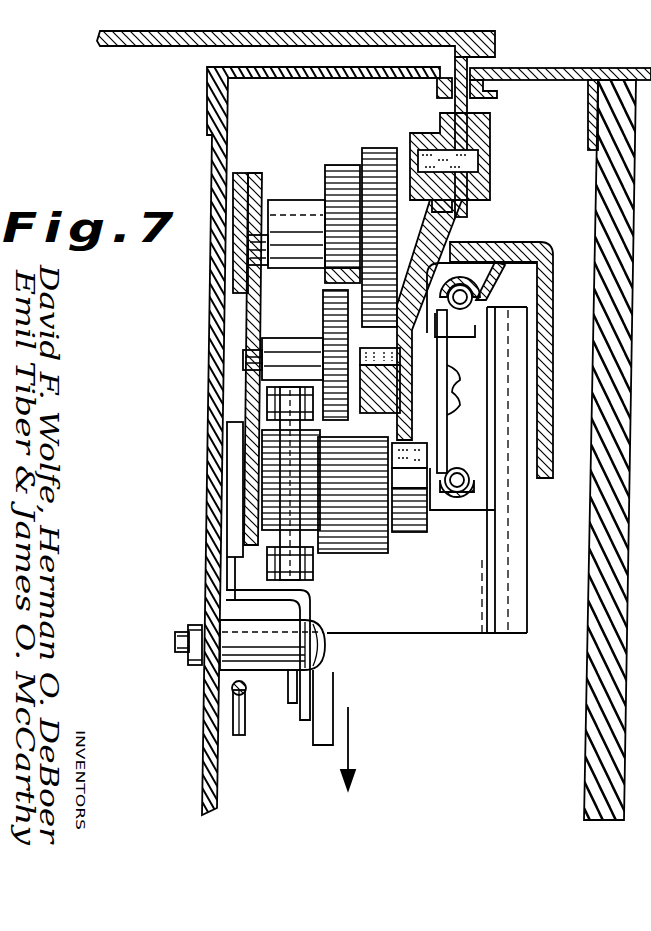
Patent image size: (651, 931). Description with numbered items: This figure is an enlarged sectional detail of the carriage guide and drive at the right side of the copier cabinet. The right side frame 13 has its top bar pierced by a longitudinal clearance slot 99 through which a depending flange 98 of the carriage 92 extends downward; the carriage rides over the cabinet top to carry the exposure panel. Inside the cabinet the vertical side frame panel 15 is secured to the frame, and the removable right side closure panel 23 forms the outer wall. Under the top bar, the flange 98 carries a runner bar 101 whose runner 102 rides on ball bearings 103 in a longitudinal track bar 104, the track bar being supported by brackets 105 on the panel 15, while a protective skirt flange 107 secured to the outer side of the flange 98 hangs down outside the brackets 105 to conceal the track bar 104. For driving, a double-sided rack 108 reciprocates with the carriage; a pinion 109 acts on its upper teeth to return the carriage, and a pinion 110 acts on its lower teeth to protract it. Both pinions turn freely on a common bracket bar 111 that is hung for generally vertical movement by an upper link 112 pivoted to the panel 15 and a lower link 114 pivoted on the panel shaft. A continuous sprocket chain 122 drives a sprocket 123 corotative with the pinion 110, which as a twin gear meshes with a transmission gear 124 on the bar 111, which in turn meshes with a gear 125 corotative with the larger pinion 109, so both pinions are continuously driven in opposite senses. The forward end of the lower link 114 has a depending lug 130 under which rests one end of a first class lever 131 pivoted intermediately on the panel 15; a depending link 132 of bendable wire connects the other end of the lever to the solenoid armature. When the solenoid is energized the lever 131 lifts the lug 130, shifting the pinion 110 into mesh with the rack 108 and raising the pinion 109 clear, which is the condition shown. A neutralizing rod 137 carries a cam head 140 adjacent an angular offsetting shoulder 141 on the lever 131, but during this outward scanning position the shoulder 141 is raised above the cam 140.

The right side frame 13 is at (585, 68).
The side frame panel 15 is at (204, 736).
The right side closure panel 23 is at (592, 737).
The carriage 92 is at (255, 31).
The depending flange 98 is at (455, 105).
The clearance slot 99 is at (480, 80).
The runner bar 101 is at (418, 258).
The runner 102 is at (442, 338).
The ball bearings 103 is at (465, 300).
The track bar 104 is at (467, 287).
The bracket 105 is at (573, 563).
The protective skirt flange 107 is at (547, 266).
The double-sided rack 108 is at (432, 418).
The pinion 109 is at (378, 152).
The pinion 110 is at (340, 555).
The bracket bar 111 is at (253, 178).
The upper link 112 is at (245, 250).
The lower link 114 is at (290, 462).
The continuous sprocket chain 122 is at (305, 580).
The sprocket 123 is at (315, 485).
The transmission gear 124 is at (330, 339).
The gear 125 is at (330, 187).
The depending lug 130 is at (233, 533).
The first class lever 131 is at (303, 694).
The depending link 132 is at (340, 700).
The neutralizing rod 137 is at (233, 686).
The cam head 140 is at (246, 725).
The angular offsetting shoulder 141 is at (262, 673).